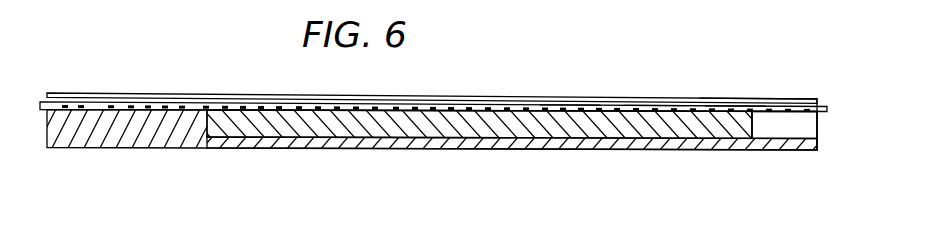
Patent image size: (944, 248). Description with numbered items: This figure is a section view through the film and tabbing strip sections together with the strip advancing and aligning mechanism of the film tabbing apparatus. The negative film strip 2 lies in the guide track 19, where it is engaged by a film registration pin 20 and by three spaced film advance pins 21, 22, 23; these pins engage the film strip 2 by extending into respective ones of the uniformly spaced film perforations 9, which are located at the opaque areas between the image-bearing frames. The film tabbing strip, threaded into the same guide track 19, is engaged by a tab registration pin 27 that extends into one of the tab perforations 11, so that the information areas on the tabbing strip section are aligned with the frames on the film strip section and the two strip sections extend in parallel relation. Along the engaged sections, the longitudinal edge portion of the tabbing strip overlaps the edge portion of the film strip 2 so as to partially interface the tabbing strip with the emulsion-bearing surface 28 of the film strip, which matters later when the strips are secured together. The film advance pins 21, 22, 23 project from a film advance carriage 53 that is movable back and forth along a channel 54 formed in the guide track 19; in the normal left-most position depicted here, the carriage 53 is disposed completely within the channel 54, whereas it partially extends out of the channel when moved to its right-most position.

The negative film strip 2 is at (803, 115).
The film perforations 9 is at (148, 104).
The tab perforations 11 is at (728, 100).
The guide track 19 is at (212, 102).
The film registration pin 20 is at (150, 108).
The film advance pin 21 is at (483, 107).
The film advance pin 22 is at (568, 108).
The film advance pin 23 is at (653, 108).
The tab registration pin 27 is at (733, 108).
The emulsion-bearing surface 28 is at (786, 103).
The film advance carriage 53 is at (737, 132).
The channel 54 is at (816, 121).